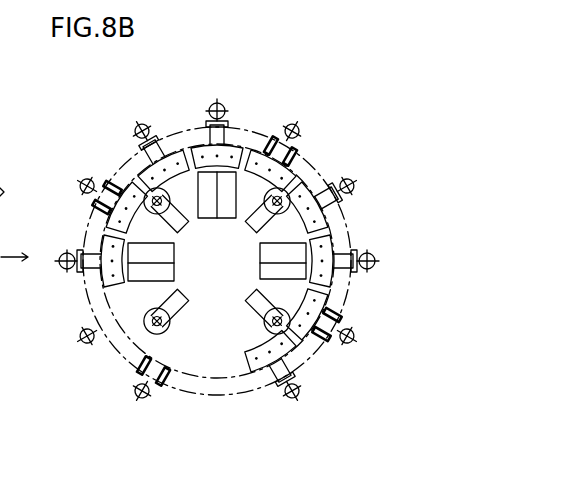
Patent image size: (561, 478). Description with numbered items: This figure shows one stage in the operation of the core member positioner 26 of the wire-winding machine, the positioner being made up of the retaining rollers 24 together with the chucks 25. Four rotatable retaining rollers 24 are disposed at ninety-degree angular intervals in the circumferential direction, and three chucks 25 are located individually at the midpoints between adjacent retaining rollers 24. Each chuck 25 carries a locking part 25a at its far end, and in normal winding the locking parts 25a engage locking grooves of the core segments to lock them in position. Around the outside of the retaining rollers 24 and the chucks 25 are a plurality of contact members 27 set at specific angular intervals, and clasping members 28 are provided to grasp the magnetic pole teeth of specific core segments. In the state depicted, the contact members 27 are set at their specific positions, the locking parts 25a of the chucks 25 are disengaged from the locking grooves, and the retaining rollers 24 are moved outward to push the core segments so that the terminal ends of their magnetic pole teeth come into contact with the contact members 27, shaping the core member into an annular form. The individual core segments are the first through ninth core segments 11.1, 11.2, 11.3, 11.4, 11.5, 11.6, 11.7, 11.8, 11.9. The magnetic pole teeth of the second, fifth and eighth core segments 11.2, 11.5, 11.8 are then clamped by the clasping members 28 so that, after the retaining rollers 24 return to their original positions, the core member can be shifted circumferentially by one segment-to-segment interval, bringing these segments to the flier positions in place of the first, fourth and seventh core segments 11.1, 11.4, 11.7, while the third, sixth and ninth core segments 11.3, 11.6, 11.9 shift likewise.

The first core segment 11.1 is at (80, 250).
The second core segment 11.2 is at (100, 187).
The third core segment 11.3 is at (155, 136).
The fourth core segment 11.4 is at (227, 123).
The fifth core segment 11.5 is at (338, 136).
The sixth core segment 11.6 is at (318, 208).
The seventh core segment 11.7 is at (348, 272).
The eighth core segment 11.8 is at (327, 343).
The ninth core segment 11.9 is at (280, 380).
The retaining rollers 24 is at (162, 340).
The chucks 25 is at (142, 276).
The locking parts 25a is at (125, 284).
The core member positioner 26 is at (130, 455).
The contact members 27 is at (297, 128).
The clasping members 28 is at (300, 163).